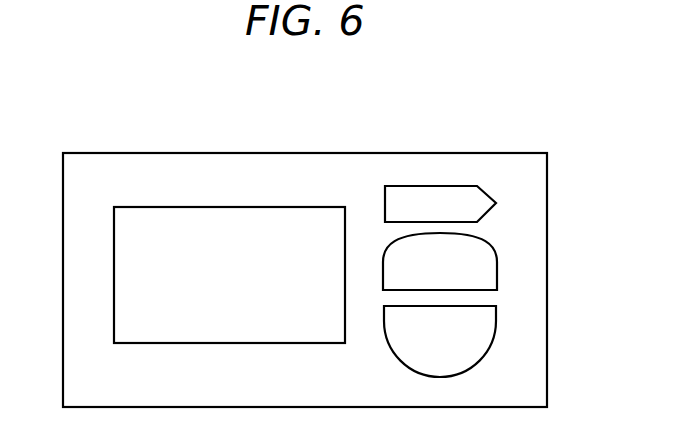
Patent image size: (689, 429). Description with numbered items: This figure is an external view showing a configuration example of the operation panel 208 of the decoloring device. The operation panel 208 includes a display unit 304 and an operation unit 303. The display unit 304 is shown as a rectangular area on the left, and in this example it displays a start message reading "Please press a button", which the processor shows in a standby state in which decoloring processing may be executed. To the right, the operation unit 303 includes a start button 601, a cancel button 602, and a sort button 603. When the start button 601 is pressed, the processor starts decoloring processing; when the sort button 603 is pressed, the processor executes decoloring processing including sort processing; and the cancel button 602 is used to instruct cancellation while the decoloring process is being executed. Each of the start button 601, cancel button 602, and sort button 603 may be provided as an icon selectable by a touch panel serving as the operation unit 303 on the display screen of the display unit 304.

The operation panel 208 is at (311, 152).
The display unit 304 is at (199, 347).
The operation unit 303 is at (365, 325).
The start button 601 is at (496, 322).
The cancel button 602 is at (497, 265).
The sort button 603 is at (493, 193).